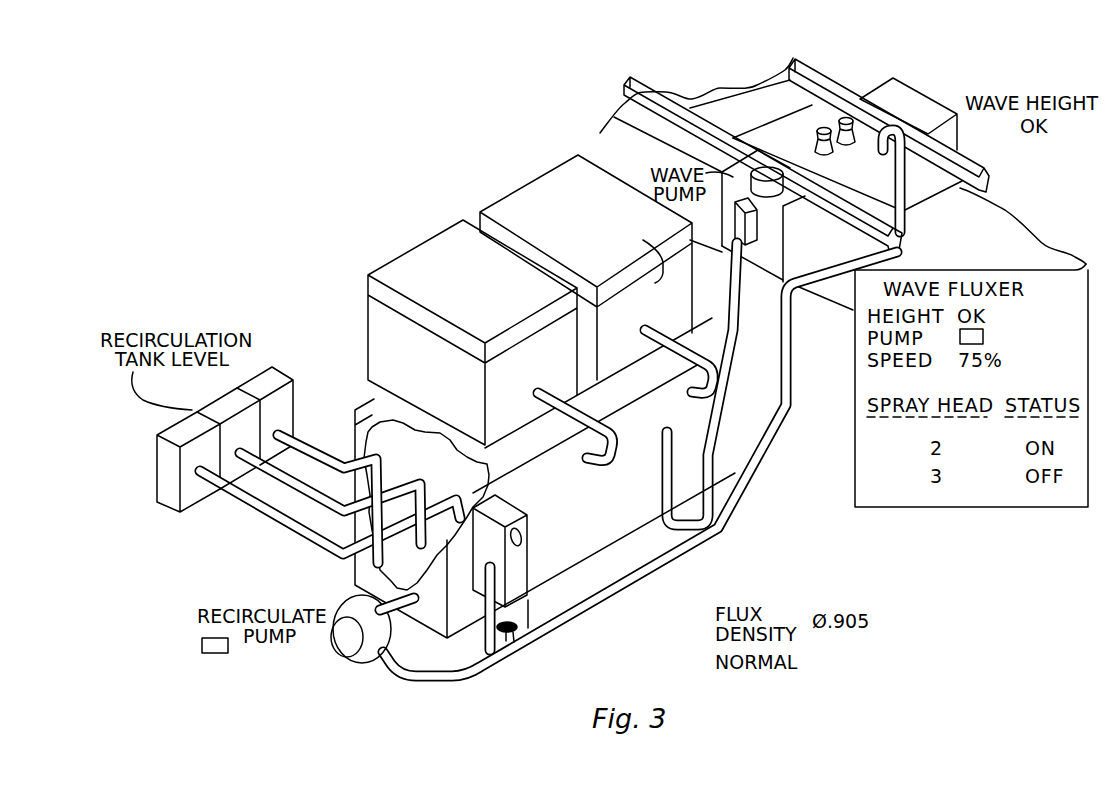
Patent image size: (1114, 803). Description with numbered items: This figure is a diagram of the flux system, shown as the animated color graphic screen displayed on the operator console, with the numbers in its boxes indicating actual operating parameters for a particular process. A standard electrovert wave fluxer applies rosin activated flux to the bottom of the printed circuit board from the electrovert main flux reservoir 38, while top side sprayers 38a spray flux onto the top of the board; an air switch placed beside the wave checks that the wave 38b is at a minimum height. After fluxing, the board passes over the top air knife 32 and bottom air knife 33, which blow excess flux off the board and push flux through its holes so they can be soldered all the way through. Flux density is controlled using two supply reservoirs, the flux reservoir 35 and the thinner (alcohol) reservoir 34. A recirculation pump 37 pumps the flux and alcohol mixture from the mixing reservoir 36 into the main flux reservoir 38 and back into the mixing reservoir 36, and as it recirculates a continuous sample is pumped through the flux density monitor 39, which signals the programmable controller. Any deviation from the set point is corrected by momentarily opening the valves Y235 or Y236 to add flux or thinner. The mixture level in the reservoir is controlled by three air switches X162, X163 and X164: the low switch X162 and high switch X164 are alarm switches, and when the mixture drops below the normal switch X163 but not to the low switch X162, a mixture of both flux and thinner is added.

The top air knife 32 is at (724, 90).
The bottom air knife 33 is at (841, 119).
The thinner supply reservoir 34 is at (433, 242).
The flux supply reservoir 35 is at (585, 140).
The mixing reservoir 36 is at (628, 522).
The recirculation pump 37 is at (345, 648).
The electrovert main flux reservoir 38 is at (937, 112).
The top side sprayers 38a is at (849, 117).
The flux wave 38b is at (860, 132).
The flux density monitor 39 is at (520, 638).
The low air switch X162 is at (192, 517).
The normal air switch X163 is at (230, 407).
The high air switch X164 is at (300, 348).
The flux valve Y235 is at (693, 348).
The thinner valve Y236 is at (563, 420).